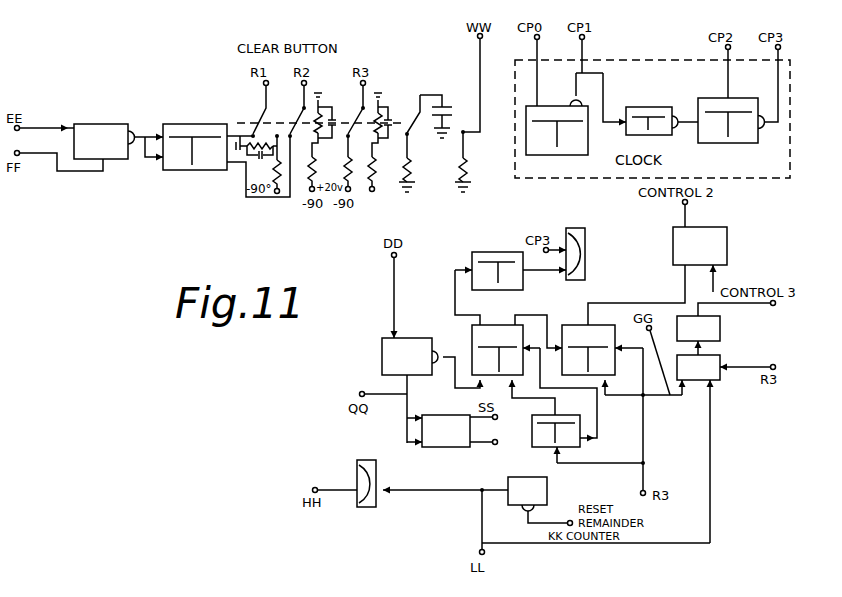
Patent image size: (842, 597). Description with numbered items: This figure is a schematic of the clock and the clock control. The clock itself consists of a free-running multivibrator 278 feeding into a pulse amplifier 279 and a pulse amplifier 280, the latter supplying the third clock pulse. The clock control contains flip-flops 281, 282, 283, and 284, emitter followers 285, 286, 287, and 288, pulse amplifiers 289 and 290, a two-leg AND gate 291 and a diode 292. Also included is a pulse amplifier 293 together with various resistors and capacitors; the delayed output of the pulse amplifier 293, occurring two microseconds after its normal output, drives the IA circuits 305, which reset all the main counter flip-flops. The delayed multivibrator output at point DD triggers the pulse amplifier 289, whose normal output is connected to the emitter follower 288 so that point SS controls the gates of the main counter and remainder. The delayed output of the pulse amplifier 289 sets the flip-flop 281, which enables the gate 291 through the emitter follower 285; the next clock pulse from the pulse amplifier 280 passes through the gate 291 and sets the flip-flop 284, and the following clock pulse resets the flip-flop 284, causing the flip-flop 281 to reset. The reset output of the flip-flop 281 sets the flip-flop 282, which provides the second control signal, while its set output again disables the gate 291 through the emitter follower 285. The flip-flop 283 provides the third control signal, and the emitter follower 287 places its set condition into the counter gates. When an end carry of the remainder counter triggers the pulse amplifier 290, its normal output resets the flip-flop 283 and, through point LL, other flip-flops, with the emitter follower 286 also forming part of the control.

The free-running multivibrator 278 is at (574, 148).
The pulse amplifier 279 is at (648, 107).
The pulse amplifier 280 is at (743, 103).
The flip-flop 281 is at (477, 333).
The flip-flop 282 is at (567, 323).
The flip-flop 283 is at (718, 376).
The flip-flop 284 is at (538, 447).
The emitter follower 285 is at (480, 252).
The emitter follower 286 is at (673, 237).
The emitter follower 287 is at (720, 333).
The emitter follower 288 is at (448, 447).
The pulse amplifier 289 is at (408, 338).
The pulse amplifier 290 is at (547, 488).
The two-leg AND gate 291 is at (582, 220).
The diode 292 is at (363, 460).
The pulse amplifier 293 is at (103, 124).
The IA circuits 305 is at (190, 124).